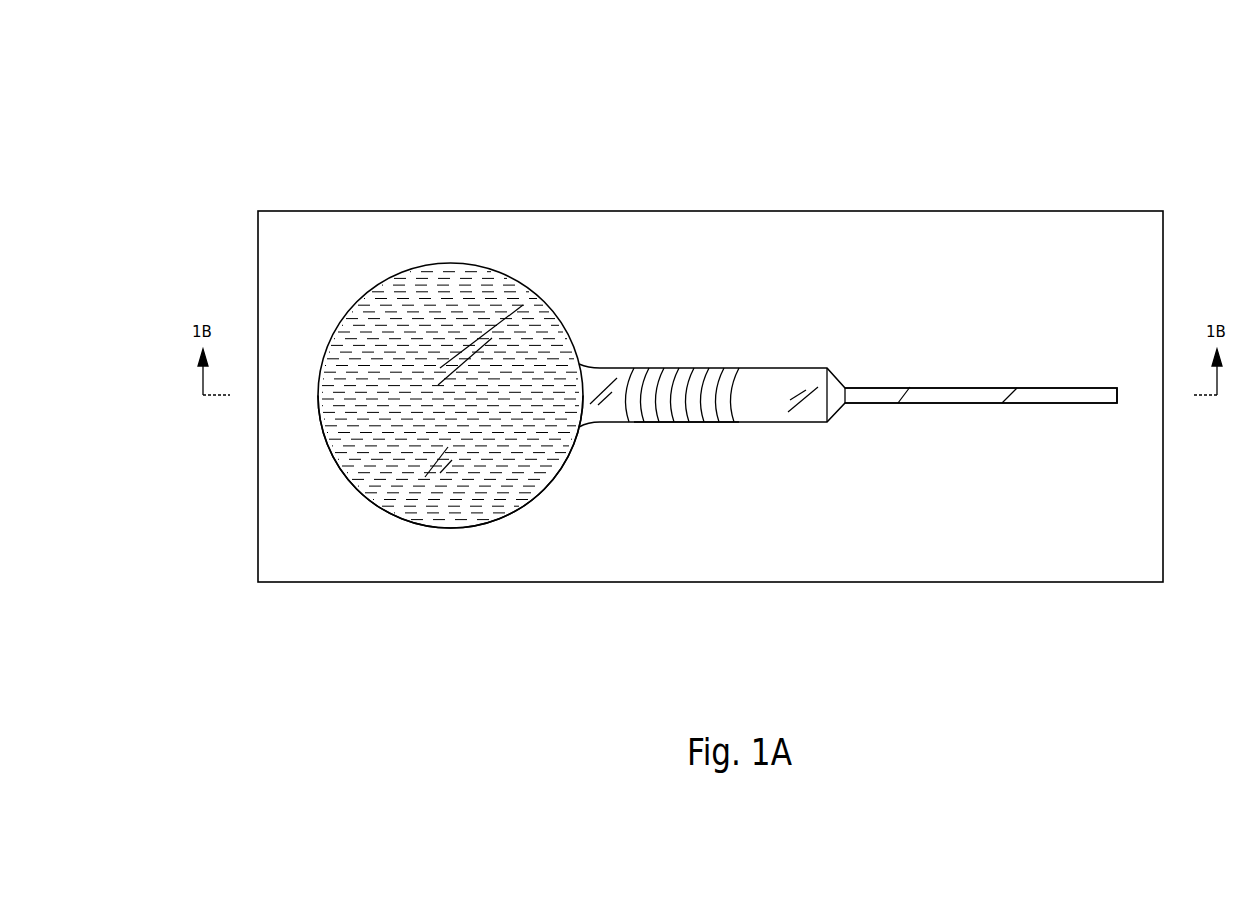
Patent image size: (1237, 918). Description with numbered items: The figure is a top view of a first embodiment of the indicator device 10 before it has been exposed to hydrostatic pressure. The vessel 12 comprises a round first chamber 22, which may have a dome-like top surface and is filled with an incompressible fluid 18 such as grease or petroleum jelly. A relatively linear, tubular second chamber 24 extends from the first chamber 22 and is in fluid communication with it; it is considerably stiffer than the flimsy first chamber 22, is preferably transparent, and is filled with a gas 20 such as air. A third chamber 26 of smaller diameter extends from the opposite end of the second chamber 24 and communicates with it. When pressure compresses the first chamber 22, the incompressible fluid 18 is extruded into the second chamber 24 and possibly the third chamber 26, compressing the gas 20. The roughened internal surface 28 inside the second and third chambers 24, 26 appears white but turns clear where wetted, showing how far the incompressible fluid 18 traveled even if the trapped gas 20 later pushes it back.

The indicator device 10 is at (262, 125).
The vessel 12 is at (560, 290).
The incompressible fluid 18 is at (415, 302).
The gas 20 is at (773, 387).
The first chamber 22 is at (356, 494).
The second chamber 24 is at (693, 410).
The third chamber 26 is at (943, 388).
The roughened internal surface 28 is at (700, 406).